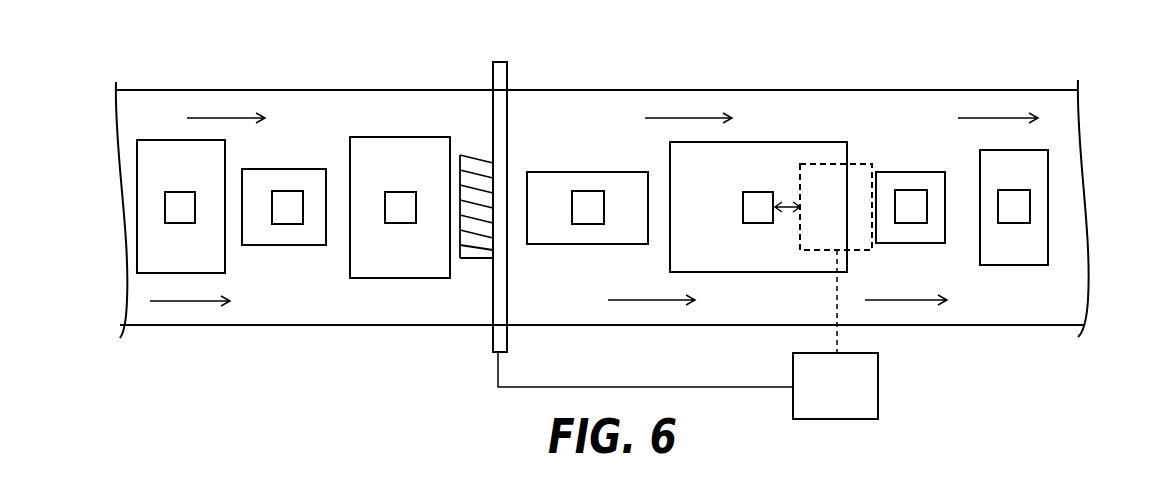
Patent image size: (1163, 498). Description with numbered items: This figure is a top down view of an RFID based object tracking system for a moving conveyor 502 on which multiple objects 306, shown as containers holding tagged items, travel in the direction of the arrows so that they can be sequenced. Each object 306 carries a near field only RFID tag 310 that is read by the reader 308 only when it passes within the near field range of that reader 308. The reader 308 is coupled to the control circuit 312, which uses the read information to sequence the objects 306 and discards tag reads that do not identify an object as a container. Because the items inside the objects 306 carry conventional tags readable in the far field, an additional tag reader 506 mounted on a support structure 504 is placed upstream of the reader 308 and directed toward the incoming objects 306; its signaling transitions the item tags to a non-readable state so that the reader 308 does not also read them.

The conveyor 502 is at (292, 325).
The objects 306 is at (287, 169).
The near field only RFID tag 310 is at (400, 192).
The reader 308 is at (852, 164).
The support structure 504 is at (507, 112).
The additional tag reader 506 is at (480, 222).
The control circuit 312 is at (880, 385).